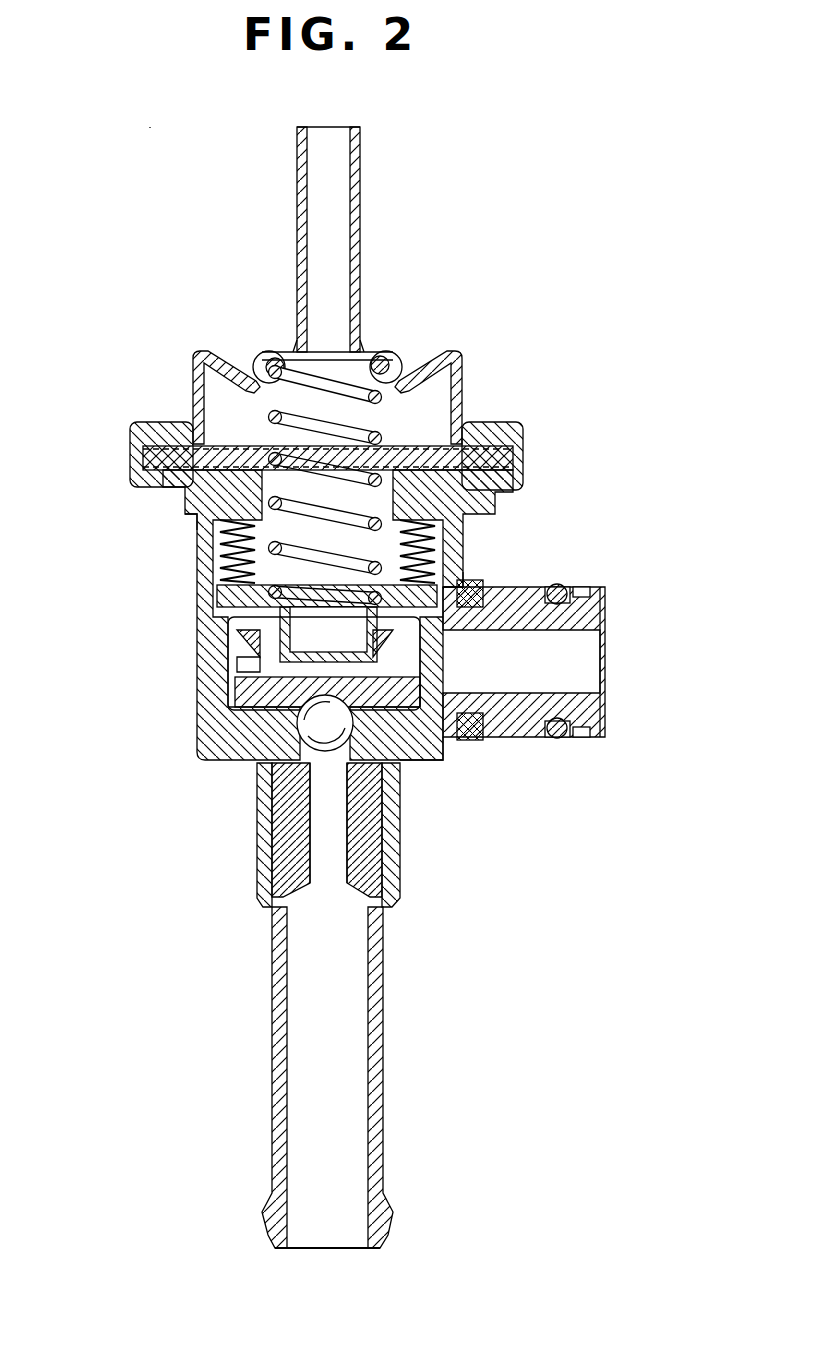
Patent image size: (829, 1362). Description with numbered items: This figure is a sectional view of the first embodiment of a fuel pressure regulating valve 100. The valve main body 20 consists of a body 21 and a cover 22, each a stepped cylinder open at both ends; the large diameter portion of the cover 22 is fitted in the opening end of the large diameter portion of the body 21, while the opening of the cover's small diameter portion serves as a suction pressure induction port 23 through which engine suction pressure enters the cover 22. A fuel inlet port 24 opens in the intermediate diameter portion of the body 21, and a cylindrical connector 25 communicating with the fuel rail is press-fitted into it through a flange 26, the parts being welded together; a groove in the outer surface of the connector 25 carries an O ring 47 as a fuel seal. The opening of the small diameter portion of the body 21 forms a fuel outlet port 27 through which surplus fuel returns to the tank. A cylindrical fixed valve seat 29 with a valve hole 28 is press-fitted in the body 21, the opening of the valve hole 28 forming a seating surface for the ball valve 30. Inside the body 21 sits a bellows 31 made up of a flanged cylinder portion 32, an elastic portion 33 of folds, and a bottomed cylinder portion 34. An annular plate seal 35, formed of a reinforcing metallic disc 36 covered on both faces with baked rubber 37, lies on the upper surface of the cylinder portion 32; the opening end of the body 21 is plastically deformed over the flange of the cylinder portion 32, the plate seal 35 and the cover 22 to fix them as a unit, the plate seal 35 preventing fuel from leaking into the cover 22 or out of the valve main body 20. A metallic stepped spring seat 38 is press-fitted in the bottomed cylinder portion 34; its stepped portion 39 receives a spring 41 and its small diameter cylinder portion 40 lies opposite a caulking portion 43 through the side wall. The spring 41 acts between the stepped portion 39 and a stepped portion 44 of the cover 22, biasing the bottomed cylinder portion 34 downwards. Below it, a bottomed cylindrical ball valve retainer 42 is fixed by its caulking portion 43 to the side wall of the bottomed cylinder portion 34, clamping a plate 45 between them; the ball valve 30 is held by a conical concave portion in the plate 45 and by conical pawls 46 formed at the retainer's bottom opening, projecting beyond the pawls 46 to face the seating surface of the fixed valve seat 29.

The pressure regulating valve 100 is at (196, 316).
The valve main body 20 is at (192, 582).
The body 21 is at (222, 556).
The cover 22 is at (466, 380).
The suction pressure induction port 23 is at (336, 128).
The fuel inlet port 24 is at (423, 750).
The connector 25 is at (533, 737).
The flange 26 is at (470, 747).
The fuel outlet port 27 is at (325, 1250).
The valve hole 28 is at (322, 862).
The fixed valve seat 29 is at (282, 838).
The ball valve 30 is at (264, 796).
The bellows 31 is at (206, 618).
The cylinder portion 32 is at (172, 440).
The elastic portion 33 is at (200, 535).
The bottomed cylinder portion 34 is at (245, 690).
The plate seal 35 is at (512, 453).
The disc 36 is at (515, 463).
The rubber 37 is at (522, 432).
The spring seat 38 is at (472, 590).
The stepped portion 39 is at (455, 580).
The small diameter cylinder portion 40 is at (566, 589).
The spring 41 is at (395, 357).
The ball valve retainer 42 is at (230, 740).
The caulking portion 43 is at (240, 640).
The stepped portion 44 is at (374, 352).
The plate 45 is at (240, 700).
The pawls 46 is at (395, 728).
The O ring 47 is at (567, 738).